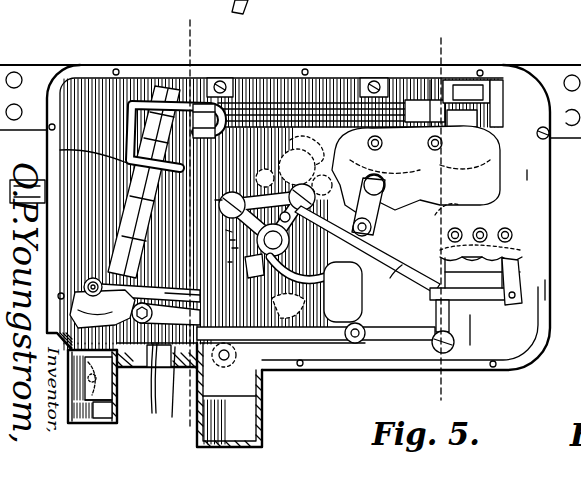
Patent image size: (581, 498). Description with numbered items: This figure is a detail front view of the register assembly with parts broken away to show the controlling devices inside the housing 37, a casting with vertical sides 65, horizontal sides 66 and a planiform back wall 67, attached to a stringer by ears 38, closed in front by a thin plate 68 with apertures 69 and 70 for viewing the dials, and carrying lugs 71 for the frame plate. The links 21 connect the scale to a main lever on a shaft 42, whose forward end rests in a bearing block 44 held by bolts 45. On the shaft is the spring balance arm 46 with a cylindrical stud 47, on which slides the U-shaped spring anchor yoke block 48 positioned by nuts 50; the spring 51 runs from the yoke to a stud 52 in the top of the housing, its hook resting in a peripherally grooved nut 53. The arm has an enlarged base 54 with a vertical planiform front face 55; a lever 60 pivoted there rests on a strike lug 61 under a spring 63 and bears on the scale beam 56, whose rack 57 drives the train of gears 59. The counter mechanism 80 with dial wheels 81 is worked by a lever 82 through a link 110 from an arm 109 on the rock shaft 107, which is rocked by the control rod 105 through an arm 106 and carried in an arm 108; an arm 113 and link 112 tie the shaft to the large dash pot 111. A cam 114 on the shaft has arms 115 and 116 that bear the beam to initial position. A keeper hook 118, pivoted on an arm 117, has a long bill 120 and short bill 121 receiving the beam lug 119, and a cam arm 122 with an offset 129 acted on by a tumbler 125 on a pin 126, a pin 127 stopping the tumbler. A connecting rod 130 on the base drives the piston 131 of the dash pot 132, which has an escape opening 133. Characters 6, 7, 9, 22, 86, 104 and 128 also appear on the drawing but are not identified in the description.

The section line 6- 6 is at (216, 222).
The section line 7- 7 is at (441, 64).
The screw 9 is at (501, 247).
The links 21 is at (300, 366).
The cam 22 is at (305, 150).
The housing 37 is at (98, 72).
The ears 38 is at (28, 75).
The shaft 42 is at (157, 366).
The bearing block 44 is at (160, 350).
The bolts 45 is at (170, 395).
The spring balance arm 46 is at (122, 204).
The cylindrical stud 47 is at (190, 98).
The spring anchor yoke block 48 is at (131, 100).
The nuts 50 is at (127, 163).
The spring 51 is at (425, 80).
The stud 52 is at (465, 80).
The peripherally grooved nut 53 is at (502, 80).
The enlarged base 54 is at (103, 287).
The vertical planiform front face 55 is at (102, 309).
The scale beam 56 is at (407, 342).
The vertically reciprocable rack 57 is at (470, 315).
The train of gears 59 is at (437, 215).
The lever 60 is at (182, 297).
The strike lug 61 is at (95, 310).
The spring 63 is at (142, 292).
The vertical sides 65 is at (545, 288).
The horizontal sides 66 is at (403, 75).
The back wall 67 is at (166, 314).
The thin plate 68 is at (527, 175).
The aperture 69 is at (488, 232).
The aperture 70 is at (455, 153).
The lugs 71 is at (363, 78).
The counter mechanism 80 is at (473, 273).
The dial wheels 81 is at (515, 253).
The lever 82 is at (518, 277).
The scalloped plate 86 is at (481, 255).
The plate 104 is at (473, 259).
The control rod 105 is at (28, 185).
The arm 106 is at (330, 194).
The rock shaft 107 is at (273, 240).
The arm 108 is at (285, 168).
The arm 109 is at (360, 222).
The link 110 is at (390, 278).
The dash pot 111 is at (245, 425).
The link 112 is at (222, 200).
The arm 113 is at (267, 212).
The cam 114 is at (232, 232).
The arm 115 is at (232, 262).
The arm 116 is at (310, 326).
The arm 117 is at (412, 190).
The keeper hook 118 is at (385, 300).
The lug 119 is at (360, 343).
The long bill 120 is at (345, 343).
The short bill 121 is at (282, 329).
The cam arm 122 is at (337, 270).
The tumbler 125 is at (288, 305).
The pin 126 is at (250, 266).
The pin 127 is at (235, 240).
The pin 128 is at (238, 248).
The offset 129 is at (300, 260).
The connecting rod 130 is at (105, 370).
The piston 131 is at (100, 423).
The dash pot 132 is at (112, 410).
The escape opening 133 is at (105, 425).